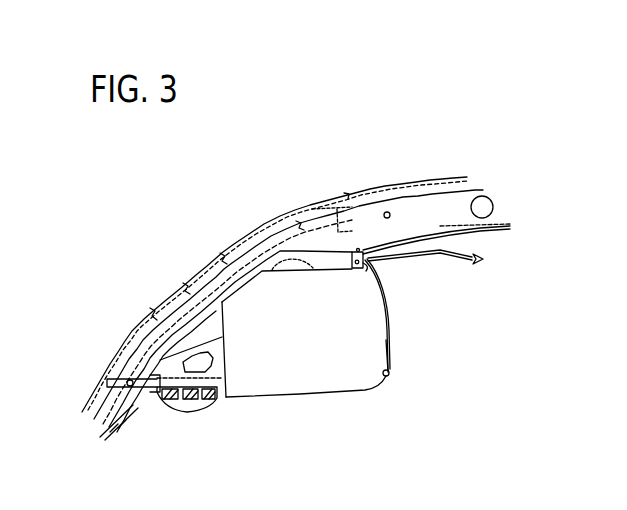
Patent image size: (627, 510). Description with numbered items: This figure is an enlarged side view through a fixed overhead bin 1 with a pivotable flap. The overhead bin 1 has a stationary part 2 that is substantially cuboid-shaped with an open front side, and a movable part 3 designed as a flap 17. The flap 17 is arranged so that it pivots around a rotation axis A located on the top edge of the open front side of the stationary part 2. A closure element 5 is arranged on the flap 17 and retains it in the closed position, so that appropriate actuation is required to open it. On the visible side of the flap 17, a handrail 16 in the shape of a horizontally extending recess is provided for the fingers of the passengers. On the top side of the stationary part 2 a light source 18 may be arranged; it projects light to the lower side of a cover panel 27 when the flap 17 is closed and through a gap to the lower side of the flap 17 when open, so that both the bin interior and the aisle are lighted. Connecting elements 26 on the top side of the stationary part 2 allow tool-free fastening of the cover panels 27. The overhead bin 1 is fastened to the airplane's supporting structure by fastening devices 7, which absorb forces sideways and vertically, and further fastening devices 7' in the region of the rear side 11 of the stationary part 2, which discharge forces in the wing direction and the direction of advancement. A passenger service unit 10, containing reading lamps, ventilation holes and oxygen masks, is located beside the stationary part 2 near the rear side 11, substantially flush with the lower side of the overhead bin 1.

The overhead bin 1 is at (268, 331).
The stationary part 2 is at (362, 392).
The movable part 3 is at (497, 308).
The flap 17 is at (447, 260).
The closure element 5 is at (483, 262).
The fastening device 7 is at (287, 301).
The further fastening device 7' is at (91, 367).
The passenger service unit 10 is at (180, 408).
The rear side 11 is at (183, 352).
The handrail 16 is at (393, 355).
The light source 18 is at (330, 263).
The connecting element 26 is at (358, 250).
The cover panel 27 is at (482, 230).
The rotation axis A is at (367, 245).